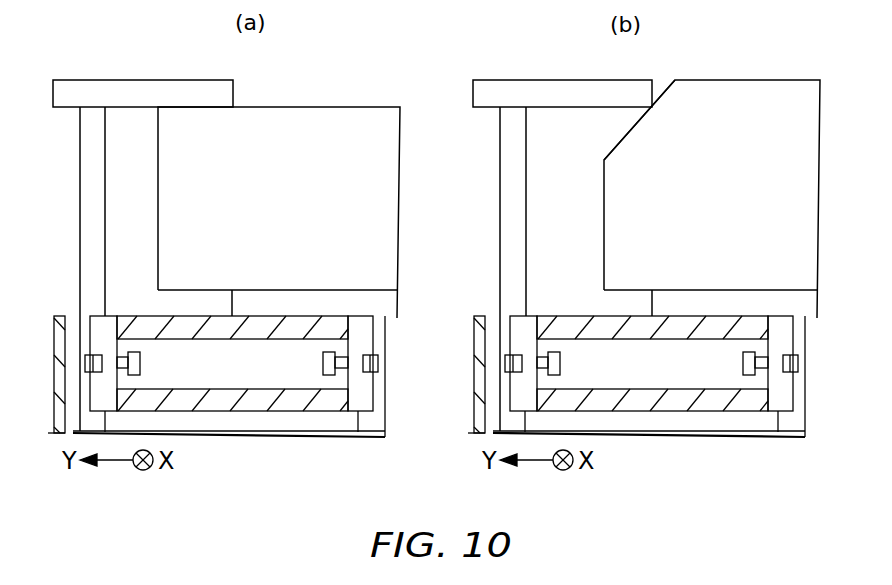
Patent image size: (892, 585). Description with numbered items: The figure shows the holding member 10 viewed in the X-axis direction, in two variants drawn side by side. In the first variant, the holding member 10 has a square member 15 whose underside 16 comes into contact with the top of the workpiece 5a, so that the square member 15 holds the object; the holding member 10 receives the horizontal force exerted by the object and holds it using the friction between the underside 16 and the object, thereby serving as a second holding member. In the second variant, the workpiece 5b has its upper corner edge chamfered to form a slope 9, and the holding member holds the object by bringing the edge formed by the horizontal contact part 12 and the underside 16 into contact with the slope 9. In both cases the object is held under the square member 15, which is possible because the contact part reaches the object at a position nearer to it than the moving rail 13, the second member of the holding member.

The workpiece 5a is at (323, 105).
The workpiece 5b is at (735, 79).
The slope 9 is at (613, 146).
The holding member 10 is at (255, 77).
The horizontal contact part 12 is at (653, 89).
The moving rail 13 is at (88, 178).
The square member 15 is at (148, 80).
The underside 16 is at (128, 108).